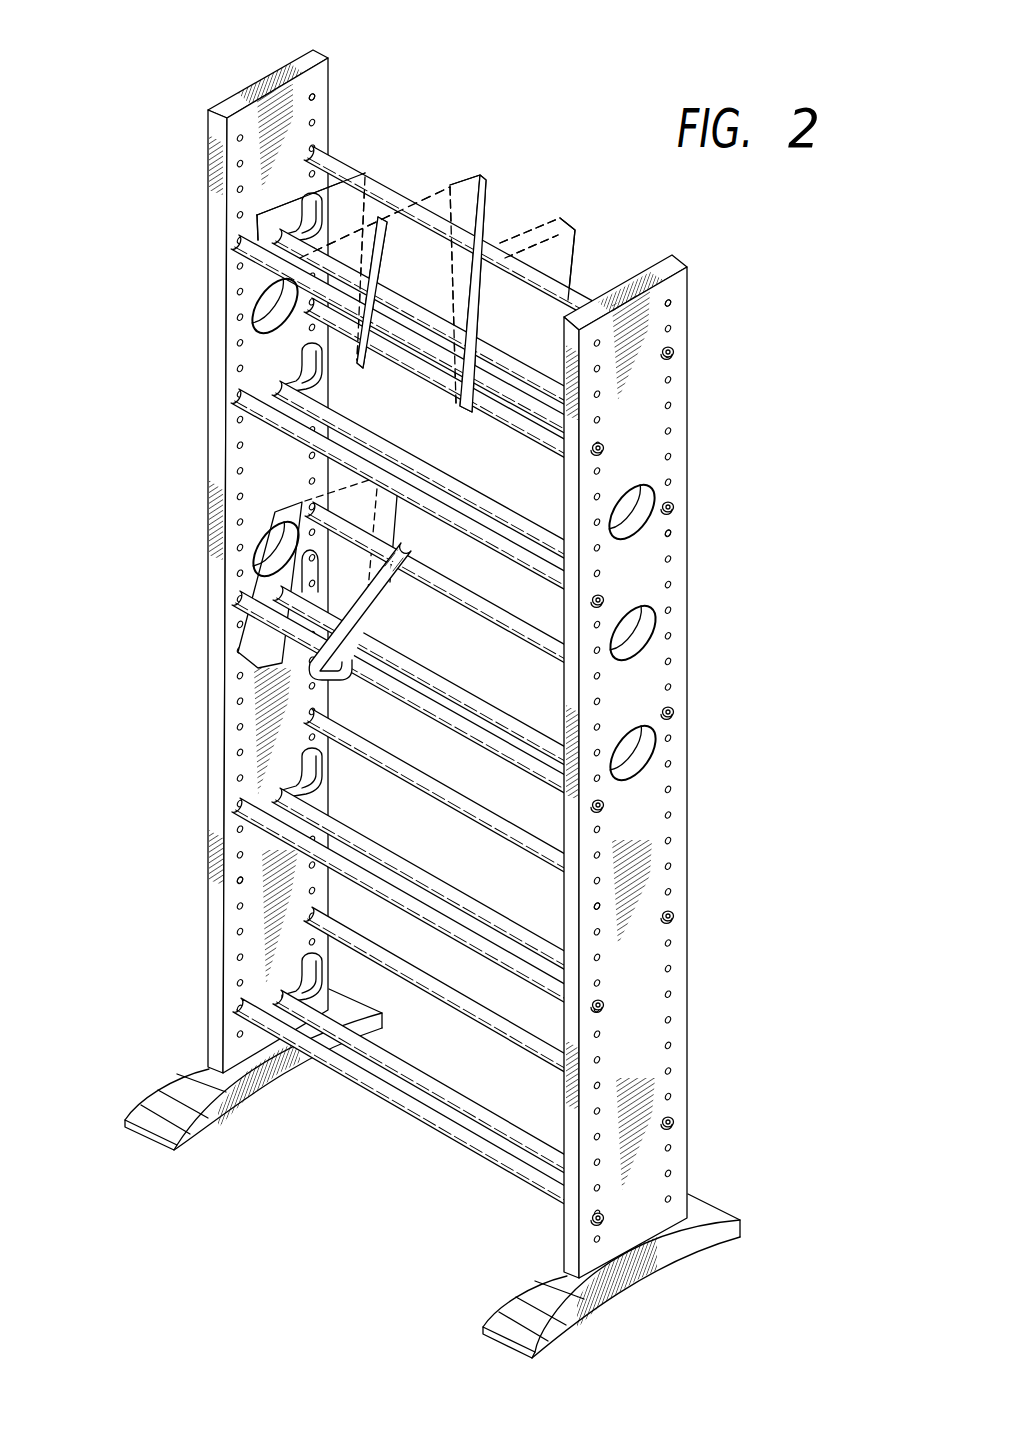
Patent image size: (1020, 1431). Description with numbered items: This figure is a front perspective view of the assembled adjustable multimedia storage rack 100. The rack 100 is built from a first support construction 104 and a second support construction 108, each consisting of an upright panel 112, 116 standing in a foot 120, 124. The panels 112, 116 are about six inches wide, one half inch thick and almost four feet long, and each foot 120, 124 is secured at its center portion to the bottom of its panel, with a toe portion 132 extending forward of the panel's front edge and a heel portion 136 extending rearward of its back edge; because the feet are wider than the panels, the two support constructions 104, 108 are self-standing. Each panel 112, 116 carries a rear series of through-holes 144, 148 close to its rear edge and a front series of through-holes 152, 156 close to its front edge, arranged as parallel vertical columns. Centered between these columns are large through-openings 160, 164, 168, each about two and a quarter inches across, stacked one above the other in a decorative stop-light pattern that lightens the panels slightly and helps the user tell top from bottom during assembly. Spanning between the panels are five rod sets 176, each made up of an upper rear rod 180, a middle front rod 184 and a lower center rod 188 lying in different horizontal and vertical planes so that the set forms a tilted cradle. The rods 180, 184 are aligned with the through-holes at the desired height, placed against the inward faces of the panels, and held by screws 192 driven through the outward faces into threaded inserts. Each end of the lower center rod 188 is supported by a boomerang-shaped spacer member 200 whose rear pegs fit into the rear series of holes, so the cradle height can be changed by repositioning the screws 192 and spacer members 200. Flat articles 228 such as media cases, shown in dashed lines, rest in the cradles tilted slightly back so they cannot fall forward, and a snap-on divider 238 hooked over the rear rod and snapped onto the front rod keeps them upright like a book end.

The adjustable multimedia storage rack 100 is at (743, 481).
The first support construction 104 is at (239, 561).
The second support construction 108 is at (698, 397).
The upright panel 112 is at (231, 127).
The upright panel 116 is at (677, 535).
The foot 120 is at (246, 1066).
The foot 124 is at (627, 1245).
The toe portion 132 is at (159, 1125).
The heel portion 136 is at (737, 1203).
The rear series of through-holes 144 is at (311, 95).
The rear series of through-holes 148 is at (672, 301).
The front series of through-holes 152 is at (243, 899).
The front series of through-holes 156 is at (601, 909).
The large through-opening 160 is at (632, 500).
The large through-opening 164 is at (270, 303).
The large through-opening 168 is at (632, 752).
The rod set 176 is at (415, 1142).
The upper rear rod 180 is at (388, 192).
The middle front rod 184 is at (245, 402).
The lower center rod 188 is at (387, 447).
The screws 192 is at (673, 347).
The spacer member 200 is at (307, 367).
The flat articles 228 is at (398, 527).
The snap-on divider 238 is at (352, 628).